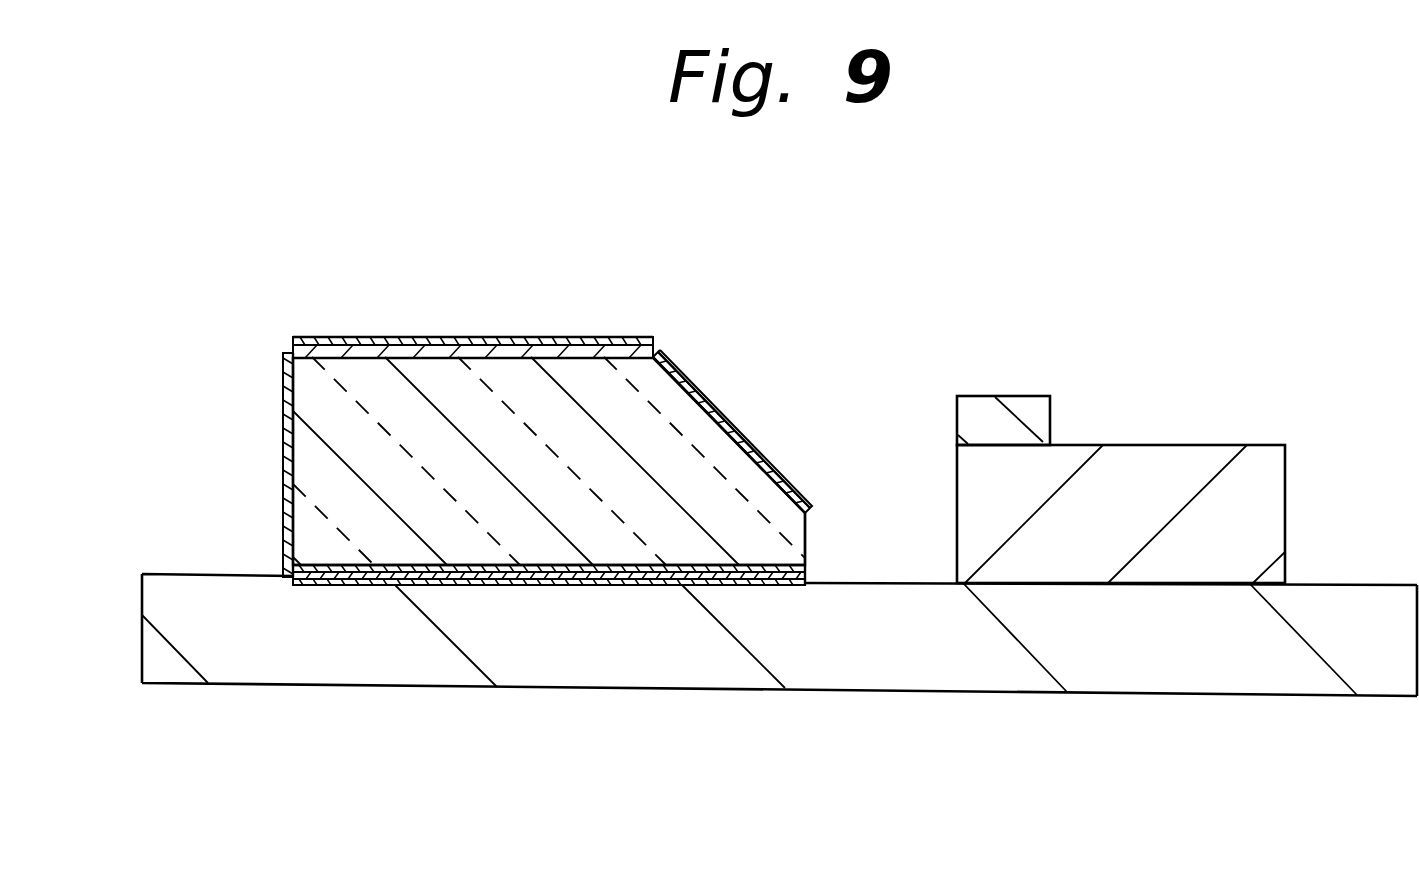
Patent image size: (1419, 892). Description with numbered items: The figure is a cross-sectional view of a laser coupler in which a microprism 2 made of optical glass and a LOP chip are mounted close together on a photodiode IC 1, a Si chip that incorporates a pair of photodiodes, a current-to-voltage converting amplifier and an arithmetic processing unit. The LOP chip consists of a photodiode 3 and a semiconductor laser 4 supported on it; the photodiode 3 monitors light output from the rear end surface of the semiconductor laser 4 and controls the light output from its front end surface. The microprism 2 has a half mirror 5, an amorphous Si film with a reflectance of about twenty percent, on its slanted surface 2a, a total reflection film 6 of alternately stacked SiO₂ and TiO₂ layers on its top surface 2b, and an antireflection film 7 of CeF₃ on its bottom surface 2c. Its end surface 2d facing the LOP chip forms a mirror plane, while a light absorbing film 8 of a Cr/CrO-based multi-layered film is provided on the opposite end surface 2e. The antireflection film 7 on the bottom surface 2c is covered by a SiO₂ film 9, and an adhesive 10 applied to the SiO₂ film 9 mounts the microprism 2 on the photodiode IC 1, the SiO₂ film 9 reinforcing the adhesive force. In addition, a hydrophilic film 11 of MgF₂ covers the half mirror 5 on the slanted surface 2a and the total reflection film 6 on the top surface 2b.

The photodiode IC 1 is at (900, 665).
The microprism 2 is at (466, 372).
The slanted surface 2a is at (770, 460).
The top surface 2b is at (380, 338).
The bottom surface 2c is at (393, 580).
The end surface 2d is at (805, 540).
The end surface 2e is at (283, 518).
The photodiode 3 is at (1205, 462).
The semiconductor laser 4 is at (993, 410).
The half mirror 5 is at (738, 422).
The total reflection film 6 is at (508, 347).
The antireflection film 7 is at (505, 578).
The light absorbing film 8 is at (283, 432).
The SiO₂ film 9 is at (597, 575).
The adhesive 10 is at (665, 582).
The hydrophilic film 11 is at (612, 340).